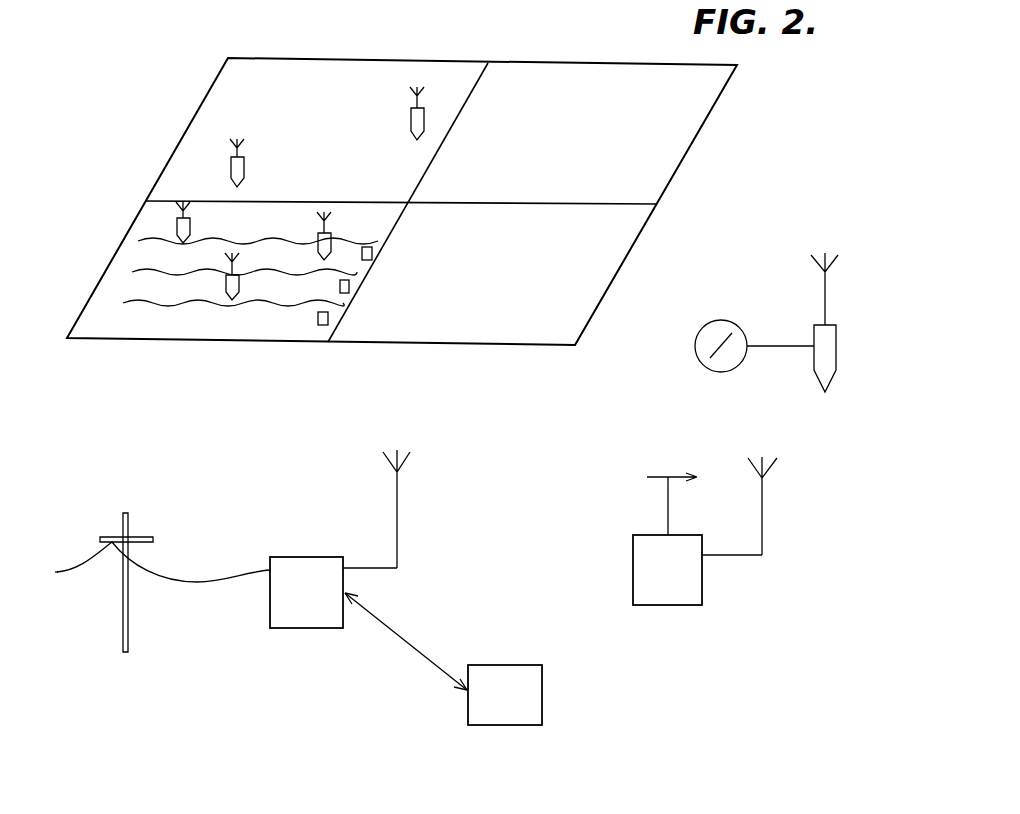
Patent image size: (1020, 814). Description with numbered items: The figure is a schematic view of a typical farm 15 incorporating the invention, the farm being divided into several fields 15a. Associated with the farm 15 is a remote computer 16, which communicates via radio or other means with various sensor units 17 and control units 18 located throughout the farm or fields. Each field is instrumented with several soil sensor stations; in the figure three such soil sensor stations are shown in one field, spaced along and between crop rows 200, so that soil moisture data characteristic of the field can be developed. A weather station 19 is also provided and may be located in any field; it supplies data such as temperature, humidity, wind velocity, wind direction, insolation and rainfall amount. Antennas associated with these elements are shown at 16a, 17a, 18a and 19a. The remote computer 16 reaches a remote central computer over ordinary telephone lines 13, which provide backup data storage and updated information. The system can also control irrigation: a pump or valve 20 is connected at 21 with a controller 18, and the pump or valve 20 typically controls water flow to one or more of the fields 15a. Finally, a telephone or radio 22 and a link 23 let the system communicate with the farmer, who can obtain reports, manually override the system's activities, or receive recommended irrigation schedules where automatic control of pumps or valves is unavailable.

The telephone lines 13 is at (198, 581).
The farm 15 is at (736, 115).
The fields 15a is at (155, 376).
The remote computer 16 is at (285, 612).
The antenna 16a is at (405, 462).
The sensor units 17 is at (231, 172).
The antenna 17a is at (232, 147).
The control units 18 is at (350, 288).
The antenna 18a is at (832, 265).
The weather station 19 is at (688, 612).
The antenna 19a is at (765, 500).
The pump or valve 20 is at (707, 366).
The connection 21 is at (773, 347).
The telephone or radio 22 is at (478, 710).
The link 23 is at (405, 640).
The crop rows 200 is at (148, 288).